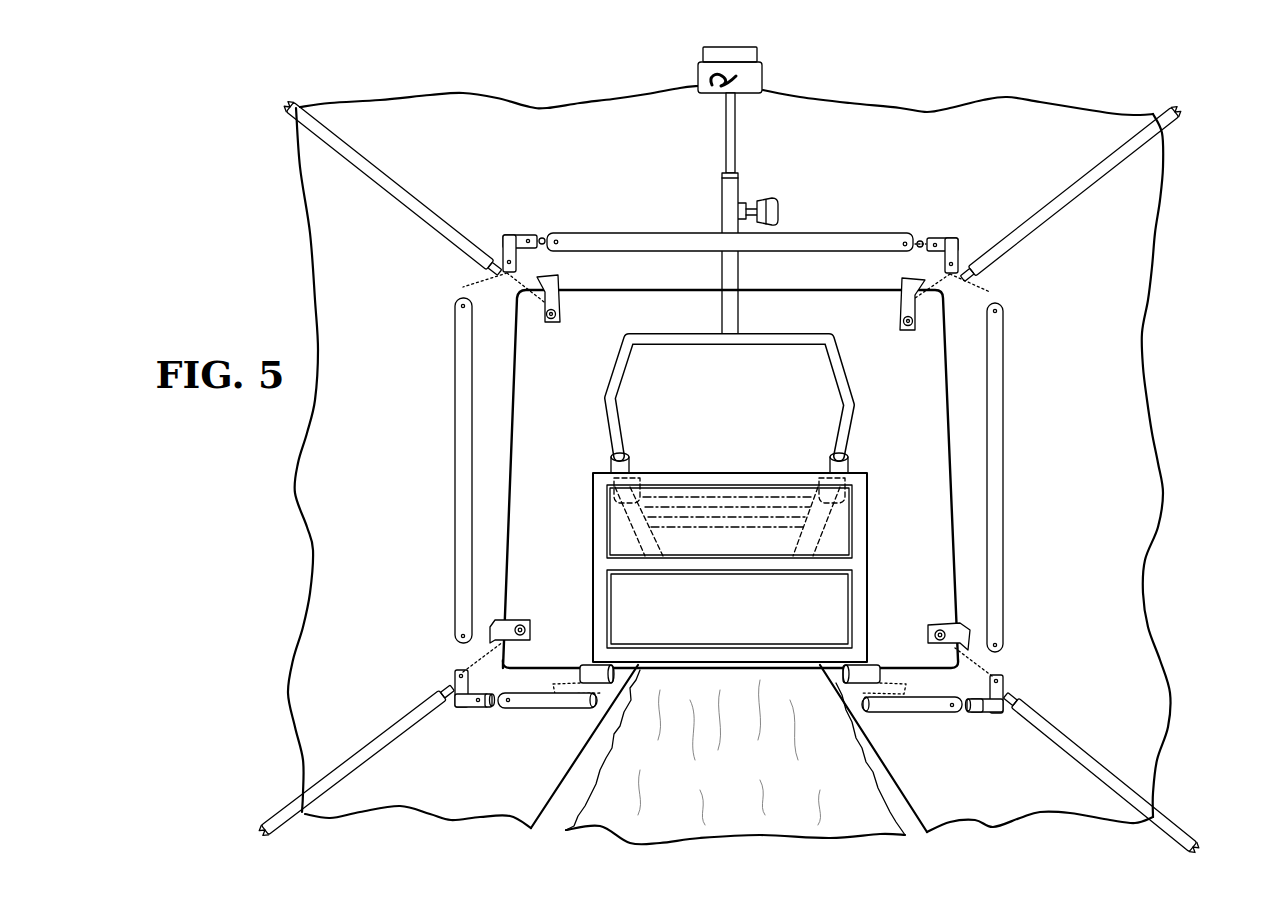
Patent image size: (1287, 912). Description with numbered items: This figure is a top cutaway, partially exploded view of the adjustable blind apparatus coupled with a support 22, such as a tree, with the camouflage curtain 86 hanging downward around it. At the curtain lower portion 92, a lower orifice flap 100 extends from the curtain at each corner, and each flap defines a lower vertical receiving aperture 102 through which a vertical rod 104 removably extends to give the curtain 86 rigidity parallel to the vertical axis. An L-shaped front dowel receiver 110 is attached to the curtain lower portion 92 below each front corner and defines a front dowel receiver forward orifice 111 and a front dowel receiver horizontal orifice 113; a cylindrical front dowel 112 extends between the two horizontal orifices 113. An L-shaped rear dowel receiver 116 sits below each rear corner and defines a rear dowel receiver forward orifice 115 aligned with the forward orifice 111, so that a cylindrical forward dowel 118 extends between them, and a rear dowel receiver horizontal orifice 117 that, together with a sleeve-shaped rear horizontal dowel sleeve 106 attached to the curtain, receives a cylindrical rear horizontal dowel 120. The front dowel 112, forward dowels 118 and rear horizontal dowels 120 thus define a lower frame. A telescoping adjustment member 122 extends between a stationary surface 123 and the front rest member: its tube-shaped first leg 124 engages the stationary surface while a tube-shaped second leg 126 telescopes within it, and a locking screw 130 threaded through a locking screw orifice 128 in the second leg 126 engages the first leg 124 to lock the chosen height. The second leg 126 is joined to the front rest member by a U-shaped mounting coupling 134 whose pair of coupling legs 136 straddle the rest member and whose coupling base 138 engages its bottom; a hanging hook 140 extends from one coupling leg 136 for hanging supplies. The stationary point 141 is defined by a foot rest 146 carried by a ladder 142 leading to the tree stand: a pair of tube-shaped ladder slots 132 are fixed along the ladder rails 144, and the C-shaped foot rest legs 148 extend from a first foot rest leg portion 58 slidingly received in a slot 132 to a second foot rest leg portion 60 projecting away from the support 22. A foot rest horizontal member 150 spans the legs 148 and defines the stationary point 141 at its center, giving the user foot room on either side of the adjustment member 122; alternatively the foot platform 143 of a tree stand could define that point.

The support 22 is at (750, 761).
The first foot rest leg portion 58 is at (740, 379).
The second foot rest leg portion 60 is at (745, 379).
The curtain 86 is at (1110, 570).
The curtain lower portion 92 is at (626, 282).
The lower orifice flap 100 is at (730, 454).
The lower vertical receiving aperture 102 is at (552, 322).
The vertical rod 104 is at (724, 455).
The rear horizontal dowel sleeve 106 is at (620, 675).
The front dowel receiver 110 is at (502, 234).
The front dowel receiver forward orifice 111 is at (508, 268).
The front dowel 112 is at (612, 237).
The front dowel receiver horizontal orifice 113 is at (535, 238).
The rear dowel receiver forward orifice 115 is at (744, 696).
The rear dowel receiver 116 is at (470, 708).
The rear dowel receiver horizontal orifice 117 is at (495, 693).
The forward dowel 118 is at (457, 502).
The rear horizontal dowel 120 is at (556, 708).
The telescoping adjustment member 122 is at (763, 218).
The stationary surface 123 is at (780, 345).
The first leg 124 is at (727, 268).
The second leg 126 is at (727, 120).
The threaded locking screw orifice 128 is at (733, 207).
The locking screw 130 is at (772, 212).
The ladder slot 132 is at (612, 467).
The mounting coupling 134 is at (740, 69).
The coupling leg 136 is at (743, 55).
The coupling base 138 is at (700, 94).
The hanging hook 140 is at (712, 84).
The stationary point 141 is at (729, 379).
The ladder 142 is at (726, 565).
The foot platform 143 is at (600, 528).
The rails 144 is at (605, 515).
The foot rest 146 is at (772, 379).
The foot rest leg 148 is at (745, 379).
The foot rest horizontal member 150 is at (740, 375).